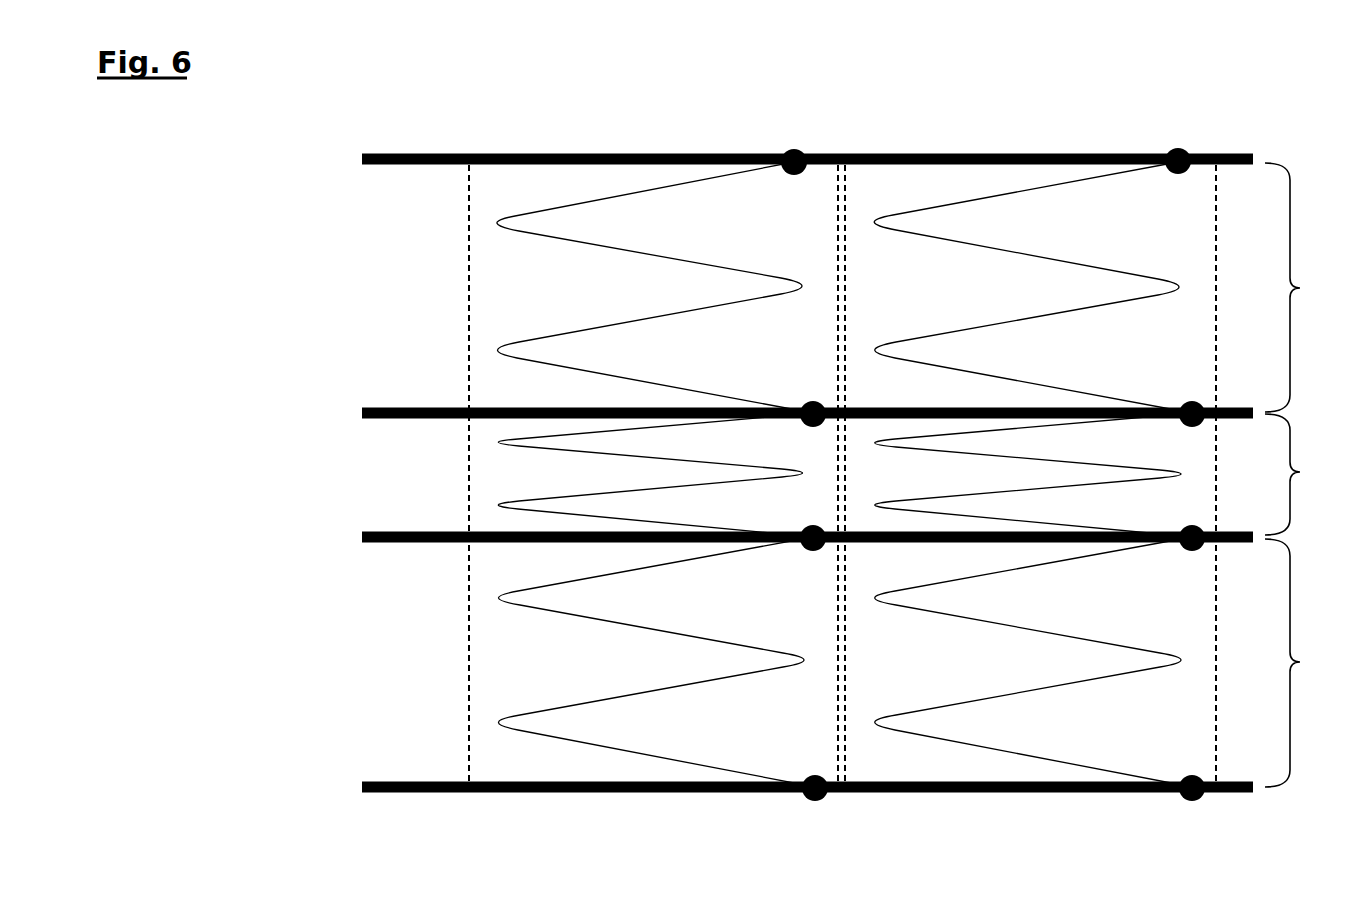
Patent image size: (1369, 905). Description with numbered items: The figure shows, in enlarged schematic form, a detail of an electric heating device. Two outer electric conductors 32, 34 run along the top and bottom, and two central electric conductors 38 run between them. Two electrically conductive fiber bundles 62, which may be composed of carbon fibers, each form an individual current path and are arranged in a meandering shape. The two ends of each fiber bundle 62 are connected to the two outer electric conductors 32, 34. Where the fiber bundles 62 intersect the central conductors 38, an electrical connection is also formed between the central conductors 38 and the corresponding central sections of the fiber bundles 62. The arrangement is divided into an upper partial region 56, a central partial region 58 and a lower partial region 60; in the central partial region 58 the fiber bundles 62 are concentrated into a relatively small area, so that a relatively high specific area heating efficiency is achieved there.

The outer electric conductor 32 is at (362, 159).
The outer electric conductor 34 is at (362, 787).
The central electric conductor 38 is at (362, 413).
The partial region 56 is at (1311, 287).
The central partial region 58 is at (1311, 474).
The partial region 60 is at (1311, 663).
The electrically conductive fiber bundle 62 is at (643, 187).